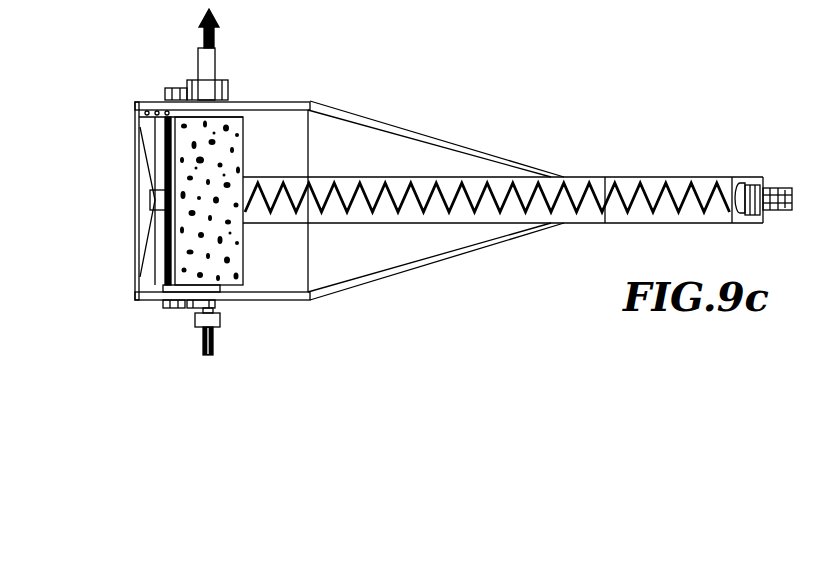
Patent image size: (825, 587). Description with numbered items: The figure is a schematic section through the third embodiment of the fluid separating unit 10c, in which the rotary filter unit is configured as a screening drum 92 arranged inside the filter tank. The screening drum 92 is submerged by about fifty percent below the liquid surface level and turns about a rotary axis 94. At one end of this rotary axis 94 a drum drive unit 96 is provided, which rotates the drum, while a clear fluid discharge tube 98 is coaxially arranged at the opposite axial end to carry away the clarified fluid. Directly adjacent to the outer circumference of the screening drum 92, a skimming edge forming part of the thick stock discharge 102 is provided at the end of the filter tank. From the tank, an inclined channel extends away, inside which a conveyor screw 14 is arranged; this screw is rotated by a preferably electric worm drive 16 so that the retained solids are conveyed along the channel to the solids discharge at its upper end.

The fluid separating unit 10c is at (450, 128).
The clear fluid discharge tube 98 is at (200, 66).
The screening drum 92 is at (238, 128).
The thick stock discharge 102 is at (140, 197).
The conveyor screw 14 is at (589, 183).
The worm drive 16 is at (775, 189).
The rotary axis 94 is at (223, 302).
The drum drive unit 96 is at (196, 316).